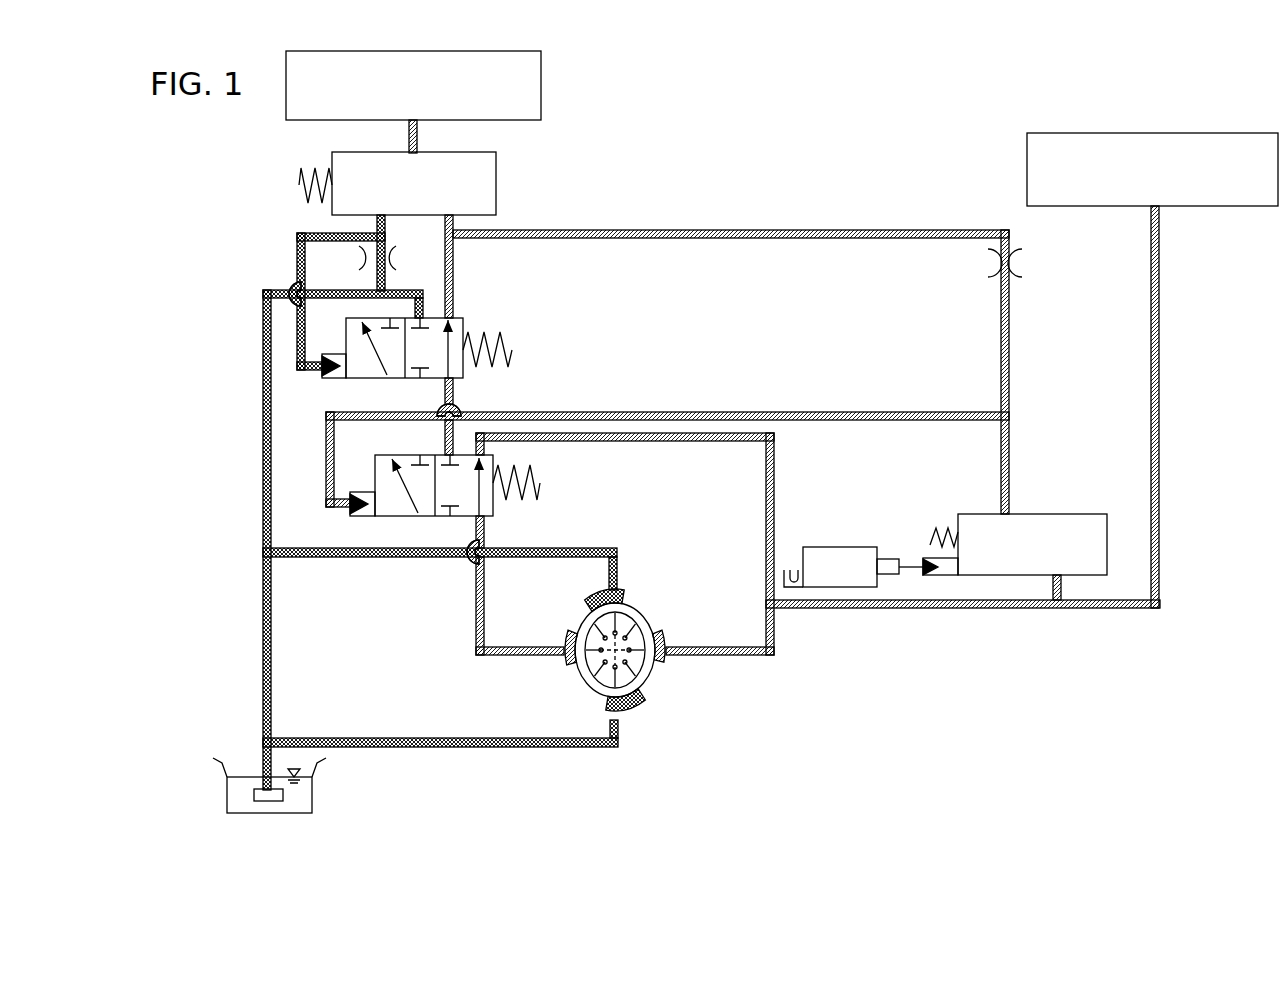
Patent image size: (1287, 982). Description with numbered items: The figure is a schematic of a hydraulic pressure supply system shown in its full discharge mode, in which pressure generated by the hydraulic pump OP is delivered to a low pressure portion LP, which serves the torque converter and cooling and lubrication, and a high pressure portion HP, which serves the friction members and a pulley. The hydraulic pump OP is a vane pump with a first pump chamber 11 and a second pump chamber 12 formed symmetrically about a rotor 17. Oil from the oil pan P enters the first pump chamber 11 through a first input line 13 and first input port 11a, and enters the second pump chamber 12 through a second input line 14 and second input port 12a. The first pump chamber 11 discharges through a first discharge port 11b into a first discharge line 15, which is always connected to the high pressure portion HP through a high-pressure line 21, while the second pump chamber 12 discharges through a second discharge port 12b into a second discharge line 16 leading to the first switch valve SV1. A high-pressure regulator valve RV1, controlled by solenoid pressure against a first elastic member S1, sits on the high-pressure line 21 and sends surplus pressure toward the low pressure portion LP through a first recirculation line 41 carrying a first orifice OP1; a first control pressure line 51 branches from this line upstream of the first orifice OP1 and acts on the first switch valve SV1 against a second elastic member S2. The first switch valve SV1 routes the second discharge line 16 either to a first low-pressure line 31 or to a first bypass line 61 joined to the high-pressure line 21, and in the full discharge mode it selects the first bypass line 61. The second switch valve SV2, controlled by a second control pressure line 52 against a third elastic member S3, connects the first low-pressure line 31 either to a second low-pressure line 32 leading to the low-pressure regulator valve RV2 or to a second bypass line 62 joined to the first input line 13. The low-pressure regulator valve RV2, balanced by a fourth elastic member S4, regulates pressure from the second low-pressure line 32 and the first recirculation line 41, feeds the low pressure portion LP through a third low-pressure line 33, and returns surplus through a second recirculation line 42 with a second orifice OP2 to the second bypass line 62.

The low pressure portion LP is at (548, 88).
The high pressure portion HP is at (1168, 133).
The high-pressure regulator valve RV1 is at (1080, 514).
The low-pressure regulator valve RV2 is at (500, 191).
The first switch valve SV1 is at (548, 478).
The second switch valve SV2 is at (520, 342).
The first elastic member S1 is at (930, 536).
The second elastic member S2 is at (540, 497).
The third elastic member S3 is at (512, 358).
The fourth elastic member S4 is at (299, 186).
The hydraulic pump OP is at (612, 650).
The first orifice OP1 is at (1030, 266).
The second orifice OP2 is at (407, 258).
The oil pan P is at (312, 789).
The first pump chamber 11 is at (655, 622).
The first input port 11a is at (620, 590).
The first discharge port 11b is at (666, 642).
The second pump chamber 12 is at (596, 698).
The second input port 12a is at (630, 722).
The second discharge port 12b is at (565, 670).
The first input line 13 is at (372, 557).
The second input line 14 is at (440, 747).
The first discharge line 15 is at (752, 655).
The second discharge line 16 is at (520, 647).
The rotor 17 is at (632, 622).
The high-pressure line 21 is at (1000, 608).
The first low-pressure line 31 is at (445, 436).
The second low-pressure line 32 is at (453, 288).
The third low-pressure line 33 is at (409, 136).
The first recirculation line 41 is at (885, 230).
The second recirculation line 42 is at (377, 226).
The first control pressure line 51 is at (816, 412).
The second control pressure line 52 is at (297, 256).
The first bypass line 61 is at (774, 456).
The second bypass line 62 is at (263, 352).